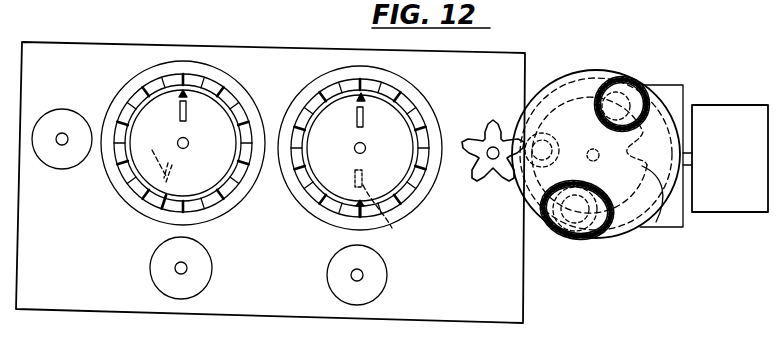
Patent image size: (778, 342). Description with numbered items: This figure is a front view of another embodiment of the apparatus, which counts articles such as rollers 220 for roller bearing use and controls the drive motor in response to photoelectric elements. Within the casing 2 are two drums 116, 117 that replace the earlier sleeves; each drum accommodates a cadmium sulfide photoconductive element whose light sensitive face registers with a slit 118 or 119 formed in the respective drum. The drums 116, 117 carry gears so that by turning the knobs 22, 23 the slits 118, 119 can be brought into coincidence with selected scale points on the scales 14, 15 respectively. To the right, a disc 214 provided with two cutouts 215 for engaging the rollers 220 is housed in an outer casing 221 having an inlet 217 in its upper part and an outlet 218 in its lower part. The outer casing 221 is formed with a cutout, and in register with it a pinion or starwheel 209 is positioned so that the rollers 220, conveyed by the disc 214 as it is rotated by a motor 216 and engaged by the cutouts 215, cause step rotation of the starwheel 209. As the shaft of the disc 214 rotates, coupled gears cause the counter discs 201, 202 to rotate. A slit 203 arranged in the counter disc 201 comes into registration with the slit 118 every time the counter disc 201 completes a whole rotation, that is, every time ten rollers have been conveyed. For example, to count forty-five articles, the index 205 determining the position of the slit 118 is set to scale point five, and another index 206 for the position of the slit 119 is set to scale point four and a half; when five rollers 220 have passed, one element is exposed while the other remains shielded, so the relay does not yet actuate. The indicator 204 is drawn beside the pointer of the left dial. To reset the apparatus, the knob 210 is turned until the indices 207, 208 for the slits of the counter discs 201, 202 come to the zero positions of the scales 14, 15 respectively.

The casing 2 is at (527, 35).
The scale 14 is at (428, 108).
The scale 15 is at (206, 66).
The knob 22 is at (380, 293).
The knob 23 is at (203, 290).
The drum 116 is at (398, 102).
The drum 117 is at (231, 96).
The slit 118 is at (384, 211).
The slit 119 is at (153, 158).
The counter disc 201 is at (396, 176).
The counter disc 202 is at (216, 173).
The slit 203 is at (364, 110).
The first dial indicator bar 204 is at (188, 108).
The index 205 is at (350, 218).
The index 206 is at (157, 197).
The index 207 is at (358, 94).
The index 208 is at (181, 96).
The starwheel 209 is at (493, 121).
The knob 210 is at (53, 170).
The disc 214 is at (585, 97).
The cutout 215 is at (657, 226).
The motor 216 is at (718, 212).
The inlet 217 is at (615, 92).
The outlet 218 is at (609, 226).
The roller 220 is at (623, 102).
The outer casing 221 is at (569, 82).